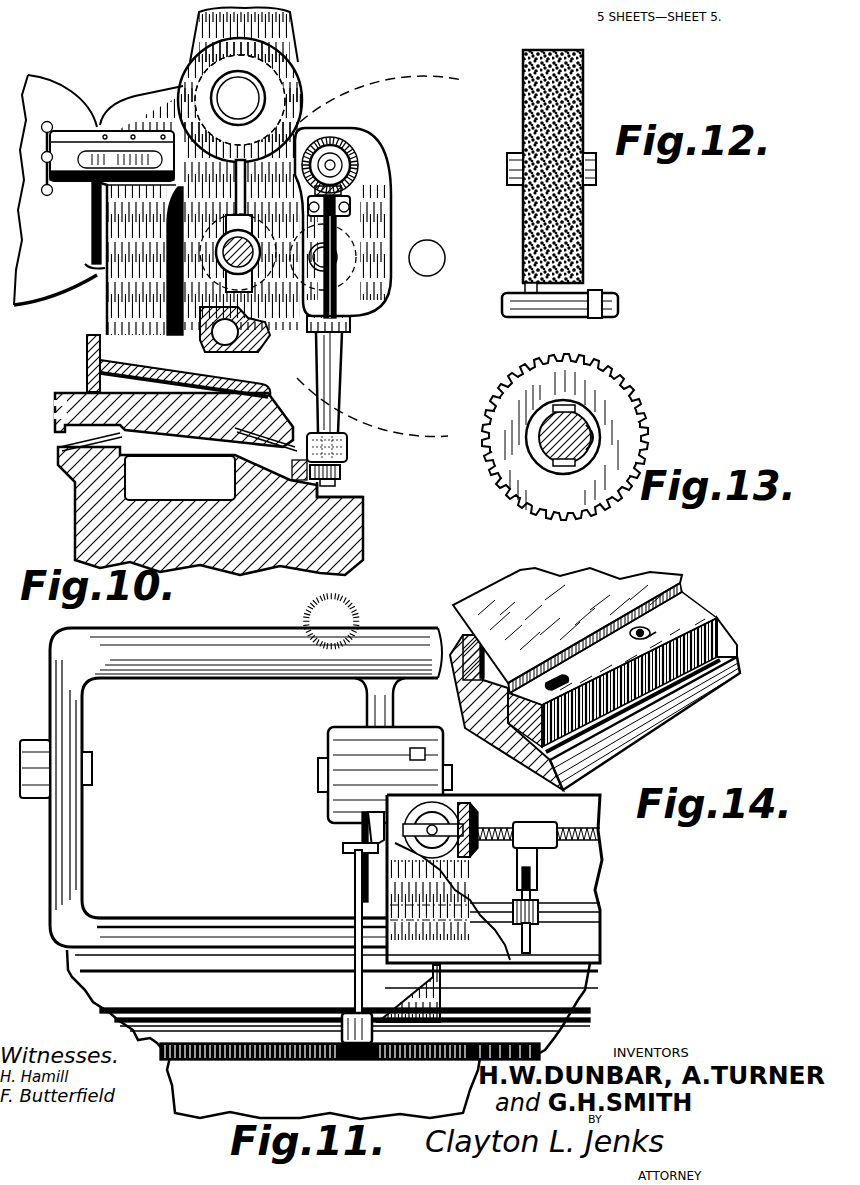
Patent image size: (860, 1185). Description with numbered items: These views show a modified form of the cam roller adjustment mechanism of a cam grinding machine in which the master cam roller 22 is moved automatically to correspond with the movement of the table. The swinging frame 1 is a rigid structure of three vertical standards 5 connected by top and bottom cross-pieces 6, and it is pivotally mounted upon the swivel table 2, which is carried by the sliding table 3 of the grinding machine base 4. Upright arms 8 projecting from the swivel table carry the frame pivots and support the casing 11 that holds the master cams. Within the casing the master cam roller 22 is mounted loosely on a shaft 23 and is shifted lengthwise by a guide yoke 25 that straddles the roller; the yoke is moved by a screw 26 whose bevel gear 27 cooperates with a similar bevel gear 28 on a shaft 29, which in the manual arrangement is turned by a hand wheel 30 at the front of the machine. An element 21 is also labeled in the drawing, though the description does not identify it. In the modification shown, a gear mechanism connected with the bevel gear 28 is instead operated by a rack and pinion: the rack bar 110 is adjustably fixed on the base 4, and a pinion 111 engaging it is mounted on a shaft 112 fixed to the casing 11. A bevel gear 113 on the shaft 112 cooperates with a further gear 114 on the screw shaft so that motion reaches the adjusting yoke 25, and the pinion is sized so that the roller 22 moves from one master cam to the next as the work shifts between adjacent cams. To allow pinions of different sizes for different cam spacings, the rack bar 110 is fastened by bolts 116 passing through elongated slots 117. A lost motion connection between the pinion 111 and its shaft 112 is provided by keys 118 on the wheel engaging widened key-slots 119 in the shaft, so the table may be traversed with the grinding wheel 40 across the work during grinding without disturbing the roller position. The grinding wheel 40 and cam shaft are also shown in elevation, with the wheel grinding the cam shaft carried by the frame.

In FIG. 10, the swinging frame 1 is at (287, 38).
In FIG. 11, the swinging frame 1 is at (257, 648).
In FIG. 10, the swivel table 2 is at (87, 363).
In FIG. 11, the swivel table 2 is at (97, 1000).
In FIG. 10, the sliding table 3 is at (55, 420).
In FIG. 10, the grinding machine base 4 is at (75, 497).
In FIG. 14, the grinding machine base 4 is at (672, 708).
In FIG. 11, the grinding machine base 4 is at (178, 1082).
In FIG. 11, the vertical standards 5 is at (383, 732).
In FIG. 10, the cross-pieces 6 is at (215, 333).
In FIG. 11, the cross-pieces 6 is at (188, 935).
In FIG. 10, the upright arms 8 is at (117, 287).
In FIG. 10, the casing 11 is at (375, 223).
In FIG. 10, the shaft block 21 is at (255, 283).
In FIG. 11, the master cam roller 22 is at (531, 940).
In FIG. 11, the shaft 23 is at (542, 913).
In FIG. 11, the guide yoke 25 is at (530, 862).
In FIG. 10, the screw 26 is at (334, 160).
In FIG. 11, the screw 26 is at (477, 837).
In FIG. 11, the bevel gear 27 is at (472, 808).
In FIG. 10, the bevel gear 28 is at (247, 207).
In FIG. 11, the bevel gear 28 is at (445, 802).
In FIG. 10, the shaft 29 is at (262, 165).
In FIG. 10, the hand wheel 30 is at (48, 124).
In FIG. 10, the grinding wheel 40 is at (405, 80).
In FIG. 12, the grinding wheel 40 is at (583, 96).
In FIG. 10, the rack bar 110 is at (318, 500).
In FIG. 14, the rack bar 110 is at (683, 610).
In FIG. 11, the rack bar 110 is at (301, 1062).
In FIG. 10, the pinion 111 is at (348, 468).
In FIG. 13, the pinion 111 is at (628, 425).
In FIG. 11, the pinion 111 is at (367, 1058).
In FIG. 10, the shaft 112 is at (327, 370).
In FIG. 13, the shaft 112 is at (548, 458).
In FIG. 11, the shaft 112 is at (357, 903).
In FIG. 10, the bevel gear 113 is at (355, 182).
In FIG. 11, the bevel gear 113 is at (350, 850).
In FIG. 10, the gear 114 is at (357, 156).
In FIG. 11, the gear 114 is at (370, 812).
In FIG. 14, the bolts 116 is at (645, 636).
In FIG. 14, the elongated slots 117 is at (563, 686).
In FIG. 13, the keys 118 is at (585, 417).
In FIG. 13, the key-slots 119 is at (597, 450).